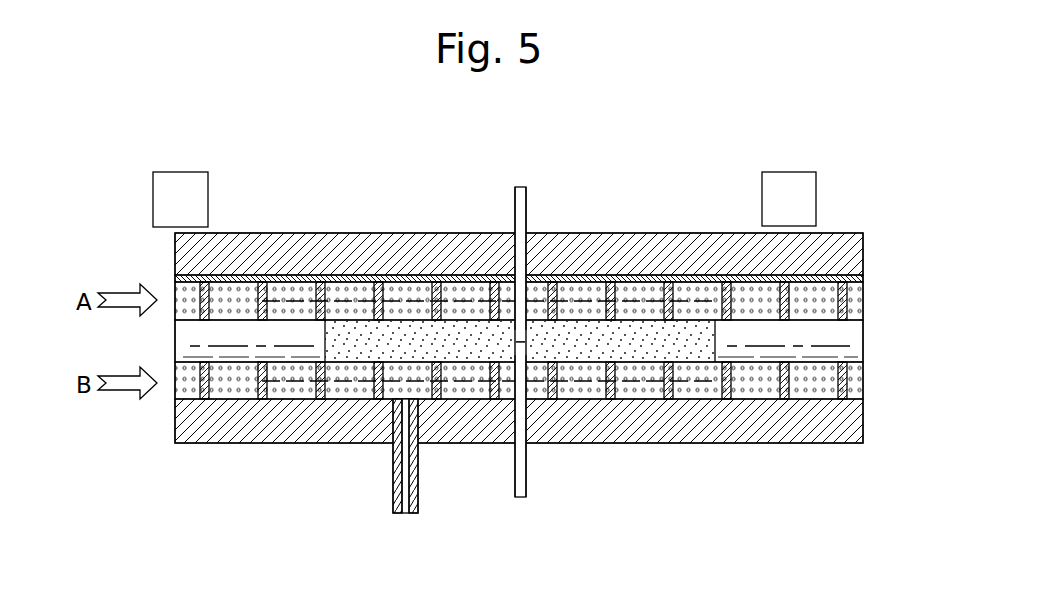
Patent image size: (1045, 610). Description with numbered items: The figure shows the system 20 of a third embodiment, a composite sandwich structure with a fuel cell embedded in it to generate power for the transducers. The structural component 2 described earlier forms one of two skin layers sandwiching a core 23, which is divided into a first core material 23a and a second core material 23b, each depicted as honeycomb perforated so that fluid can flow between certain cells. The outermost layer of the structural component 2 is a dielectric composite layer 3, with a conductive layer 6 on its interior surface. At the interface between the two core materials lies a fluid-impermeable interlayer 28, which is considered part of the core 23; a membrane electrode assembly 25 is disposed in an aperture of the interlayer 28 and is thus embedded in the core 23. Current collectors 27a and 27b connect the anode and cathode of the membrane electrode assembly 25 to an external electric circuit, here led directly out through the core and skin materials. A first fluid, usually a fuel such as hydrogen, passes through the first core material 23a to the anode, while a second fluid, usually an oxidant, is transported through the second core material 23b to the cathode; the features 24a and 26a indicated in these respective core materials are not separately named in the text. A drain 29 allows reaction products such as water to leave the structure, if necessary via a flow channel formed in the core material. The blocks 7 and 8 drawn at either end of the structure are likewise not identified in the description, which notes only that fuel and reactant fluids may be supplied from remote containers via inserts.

The humidifier assembly 20 is at (138, 167).
The structural component 2 is at (170, 240).
The dielectric composite layer 3 is at (682, 235).
The conductive layer 6 is at (866, 279).
The first fluid unit 7 is at (189, 211).
The second fluid unit 8 is at (798, 211).
The core 23 is at (335, 165).
The first core material 23a is at (302, 300).
The second core material 23b is at (234, 376).
The first flow channel ribs 24a is at (401, 300).
The membrane electrode assembly 25 is at (581, 330).
The second flow channel ribs 26a is at (592, 365).
The current collector 27a is at (513, 194).
The current collector 27b is at (513, 490).
The fluid-impermeable interlayer 28 is at (760, 357).
The drain 29 is at (393, 490).